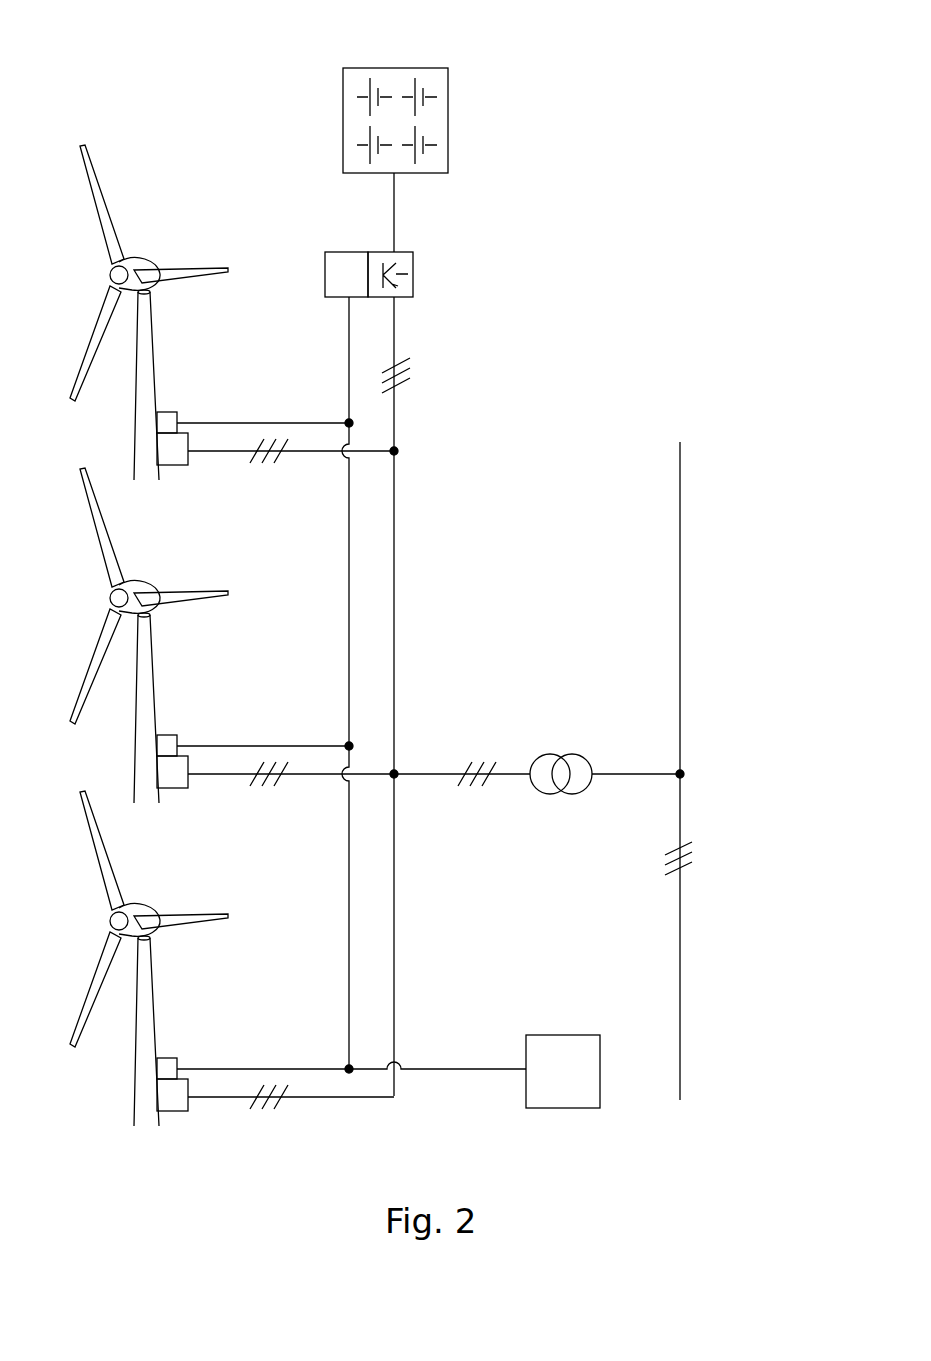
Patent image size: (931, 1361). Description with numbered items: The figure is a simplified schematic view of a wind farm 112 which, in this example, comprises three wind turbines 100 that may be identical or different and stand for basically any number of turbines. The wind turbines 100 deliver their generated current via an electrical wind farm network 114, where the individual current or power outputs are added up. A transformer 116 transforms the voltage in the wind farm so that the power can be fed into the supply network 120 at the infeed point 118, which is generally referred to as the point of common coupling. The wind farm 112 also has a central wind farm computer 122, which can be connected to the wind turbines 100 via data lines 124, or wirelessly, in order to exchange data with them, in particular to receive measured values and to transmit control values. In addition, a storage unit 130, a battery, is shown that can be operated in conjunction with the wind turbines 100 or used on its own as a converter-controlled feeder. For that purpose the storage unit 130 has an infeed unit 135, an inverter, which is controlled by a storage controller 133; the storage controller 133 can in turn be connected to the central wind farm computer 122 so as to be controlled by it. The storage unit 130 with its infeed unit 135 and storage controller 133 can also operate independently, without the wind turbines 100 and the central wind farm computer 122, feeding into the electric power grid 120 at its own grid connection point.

The wind turbine 100 is at (142, 378).
The wind farm 112 is at (514, 310).
The electrical wind farm network 114 is at (418, 773).
The transformer 116 is at (569, 725).
The infeed point 118 is at (694, 752).
The supply network 120 is at (680, 510).
The central wind farm computer 122 is at (555, 1035).
The data line 124 is at (348, 908).
The storage unit 130 is at (450, 52).
The storage controller 133 is at (347, 250).
The infeed unit 135 is at (413, 263).